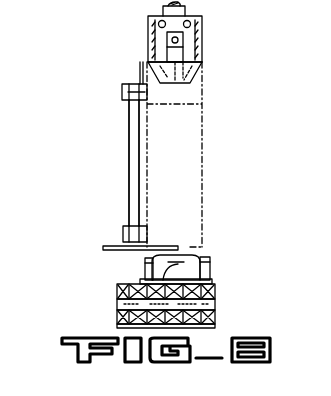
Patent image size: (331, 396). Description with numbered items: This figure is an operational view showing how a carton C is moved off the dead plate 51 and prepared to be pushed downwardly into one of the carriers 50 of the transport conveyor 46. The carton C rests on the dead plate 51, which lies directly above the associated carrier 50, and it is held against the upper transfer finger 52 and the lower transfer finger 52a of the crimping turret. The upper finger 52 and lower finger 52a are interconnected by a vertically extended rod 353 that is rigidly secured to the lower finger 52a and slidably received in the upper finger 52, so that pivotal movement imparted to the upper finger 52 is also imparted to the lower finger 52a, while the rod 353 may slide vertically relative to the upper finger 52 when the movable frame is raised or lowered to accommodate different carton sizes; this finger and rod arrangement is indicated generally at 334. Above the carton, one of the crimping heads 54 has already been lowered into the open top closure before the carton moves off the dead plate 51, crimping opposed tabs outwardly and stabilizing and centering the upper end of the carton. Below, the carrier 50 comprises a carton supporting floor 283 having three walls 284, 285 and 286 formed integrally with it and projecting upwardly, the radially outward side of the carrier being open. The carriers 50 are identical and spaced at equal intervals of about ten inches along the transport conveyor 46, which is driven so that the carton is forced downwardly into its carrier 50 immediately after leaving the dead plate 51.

The crimping head 54 is at (203, 37).
The carriage body C is at (205, 103).
The actuating rod assembly 334 is at (118, 136).
The upper transfer finger 52 is at (130, 84).
The rod 353 is at (128, 170).
The lower transfer finger 52a is at (130, 236).
The dead plate 51 is at (103, 247).
The wall 285 is at (187, 258).
The carton supporting floor 283 is at (143, 270).
The wall 286 is at (207, 258).
The carrier 50 is at (213, 273).
The wall 284 is at (120, 285).
The transport conveyor 46 is at (215, 302).